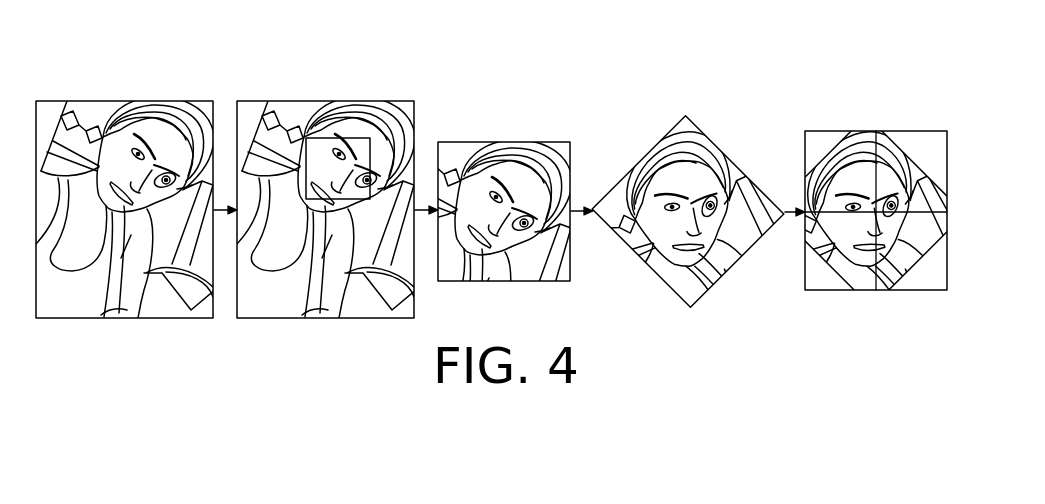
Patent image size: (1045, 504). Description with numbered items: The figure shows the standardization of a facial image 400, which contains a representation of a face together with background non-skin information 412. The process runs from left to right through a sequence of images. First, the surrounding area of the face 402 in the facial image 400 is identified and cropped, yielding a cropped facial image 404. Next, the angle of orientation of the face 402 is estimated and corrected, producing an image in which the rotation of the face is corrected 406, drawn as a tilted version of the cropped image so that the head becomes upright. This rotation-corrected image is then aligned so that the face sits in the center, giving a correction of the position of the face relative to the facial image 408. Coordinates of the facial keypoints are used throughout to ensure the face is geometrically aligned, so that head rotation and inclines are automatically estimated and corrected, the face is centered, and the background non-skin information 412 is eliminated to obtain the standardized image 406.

The facial image 400 is at (121, 102).
The face 402 is at (353, 101).
The cropped facial image 404 is at (515, 142).
The facial image with corrected rotation of the face 406 is at (683, 117).
The correction of a position of the face relative to the facial image 408 is at (880, 131).
The non-skin information 412 is at (67, 117).